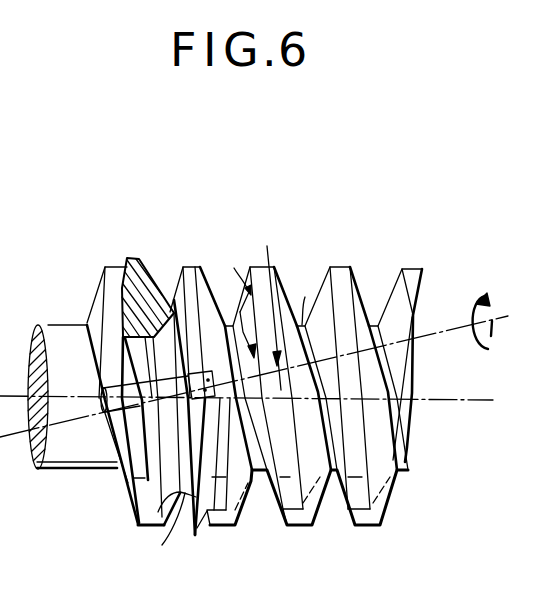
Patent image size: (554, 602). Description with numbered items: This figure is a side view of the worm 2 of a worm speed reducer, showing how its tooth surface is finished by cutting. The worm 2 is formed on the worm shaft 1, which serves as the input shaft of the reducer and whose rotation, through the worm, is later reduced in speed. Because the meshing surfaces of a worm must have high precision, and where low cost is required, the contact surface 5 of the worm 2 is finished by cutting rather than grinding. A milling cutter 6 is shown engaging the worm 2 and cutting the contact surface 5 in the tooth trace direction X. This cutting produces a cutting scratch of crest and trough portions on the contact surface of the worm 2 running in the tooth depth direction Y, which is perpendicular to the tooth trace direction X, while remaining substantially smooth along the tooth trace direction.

The worm shaft 1 is at (75, 455).
The worm 2 is at (295, 532).
The contact surface 5 is at (322, 278).
The milling cutter 6 is at (130, 258).